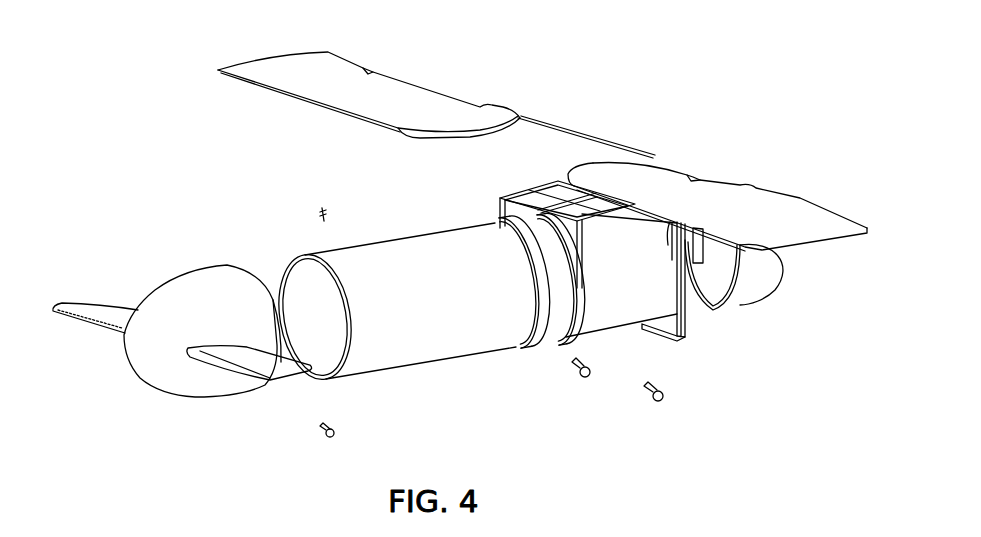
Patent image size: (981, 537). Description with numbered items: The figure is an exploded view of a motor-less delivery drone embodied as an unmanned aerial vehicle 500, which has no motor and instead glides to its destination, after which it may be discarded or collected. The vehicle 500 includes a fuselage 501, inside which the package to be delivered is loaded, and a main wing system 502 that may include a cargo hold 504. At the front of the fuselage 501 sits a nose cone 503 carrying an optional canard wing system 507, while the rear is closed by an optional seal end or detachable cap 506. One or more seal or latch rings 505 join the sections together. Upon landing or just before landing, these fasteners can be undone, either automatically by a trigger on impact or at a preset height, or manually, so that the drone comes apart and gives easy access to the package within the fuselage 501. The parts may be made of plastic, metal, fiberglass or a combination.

The unmanned aerial vehicle (UAV) 500 is at (228, 212).
The fuselage 501 is at (417, 367).
The main wing system 502 is at (427, 97).
The nose cone 503 is at (187, 397).
The cargo hold 504 is at (623, 323).
The seal or latch rings 505 is at (528, 346).
The seal end or detachable cap 506 is at (745, 298).
The canard wing system 507 is at (90, 323).